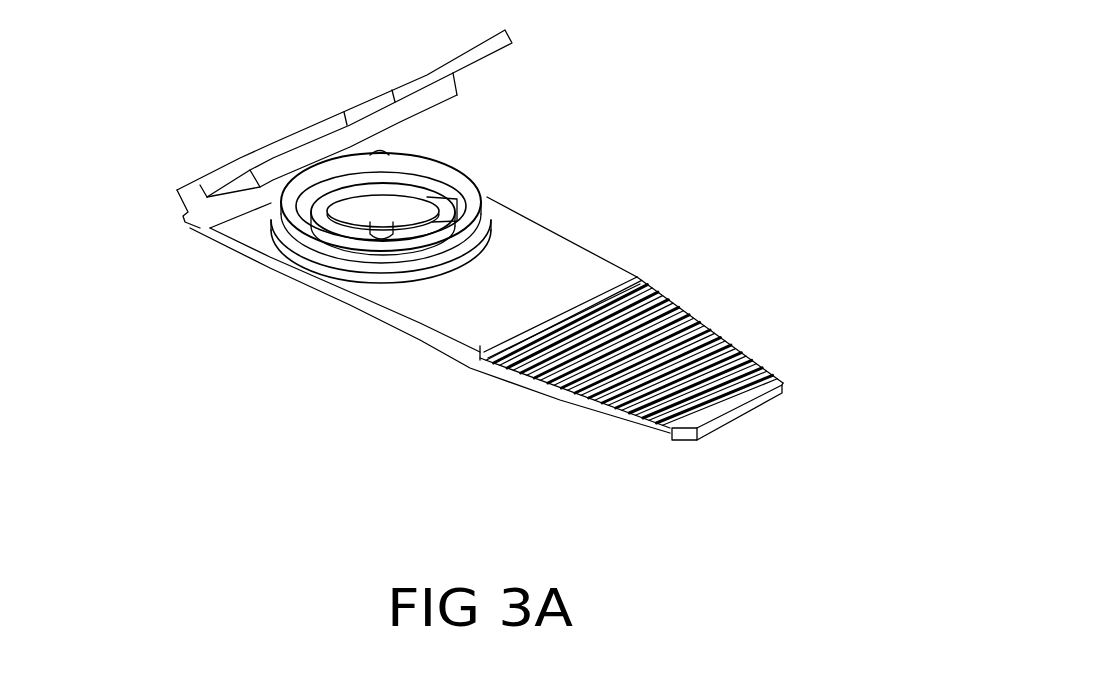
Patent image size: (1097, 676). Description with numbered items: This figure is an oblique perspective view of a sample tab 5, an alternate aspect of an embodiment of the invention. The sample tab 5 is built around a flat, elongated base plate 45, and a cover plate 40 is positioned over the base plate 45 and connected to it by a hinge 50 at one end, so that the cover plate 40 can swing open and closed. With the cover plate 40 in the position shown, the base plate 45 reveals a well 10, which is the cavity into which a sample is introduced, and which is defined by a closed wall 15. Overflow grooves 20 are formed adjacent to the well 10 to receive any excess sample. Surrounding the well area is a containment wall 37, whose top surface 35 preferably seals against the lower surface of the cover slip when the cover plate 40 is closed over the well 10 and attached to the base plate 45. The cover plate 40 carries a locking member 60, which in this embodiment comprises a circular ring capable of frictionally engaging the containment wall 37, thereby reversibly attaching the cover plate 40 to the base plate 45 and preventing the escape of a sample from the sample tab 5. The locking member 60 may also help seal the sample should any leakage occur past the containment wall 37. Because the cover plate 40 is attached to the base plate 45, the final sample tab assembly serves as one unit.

The sample tab 5 is at (728, 487).
The well 10 is at (325, 267).
The closed wall 15 is at (436, 155).
The overflow grooves 20 is at (325, 297).
The top surface 35 is at (431, 184).
The containment wall 37 is at (466, 211).
The cover plate 40 is at (339, 113).
The base plate 45 is at (486, 340).
The hinge 50 is at (130, 202).
The locking member 60 is at (493, 87).